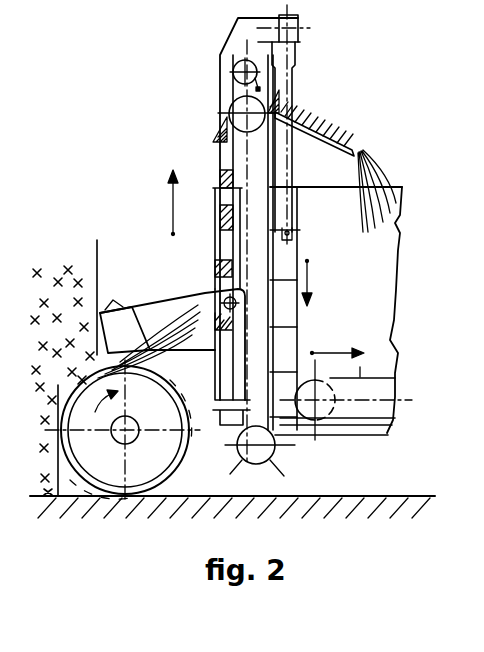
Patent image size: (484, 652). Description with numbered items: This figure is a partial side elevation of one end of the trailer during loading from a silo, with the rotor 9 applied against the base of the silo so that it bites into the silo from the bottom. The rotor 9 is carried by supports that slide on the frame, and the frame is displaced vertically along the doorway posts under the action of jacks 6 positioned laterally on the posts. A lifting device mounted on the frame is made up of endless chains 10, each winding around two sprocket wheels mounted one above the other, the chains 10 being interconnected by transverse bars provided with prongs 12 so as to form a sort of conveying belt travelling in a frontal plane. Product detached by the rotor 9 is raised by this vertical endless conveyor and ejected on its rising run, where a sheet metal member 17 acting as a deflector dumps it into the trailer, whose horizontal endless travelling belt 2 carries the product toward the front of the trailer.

The endless travelling belt 2 is at (390, 373).
The jack 6 is at (289, 86).
The rotor 9 is at (160, 455).
The endless chain 10 is at (228, 152).
The prong 12 is at (222, 286).
The sheet metal member 17 is at (340, 145).